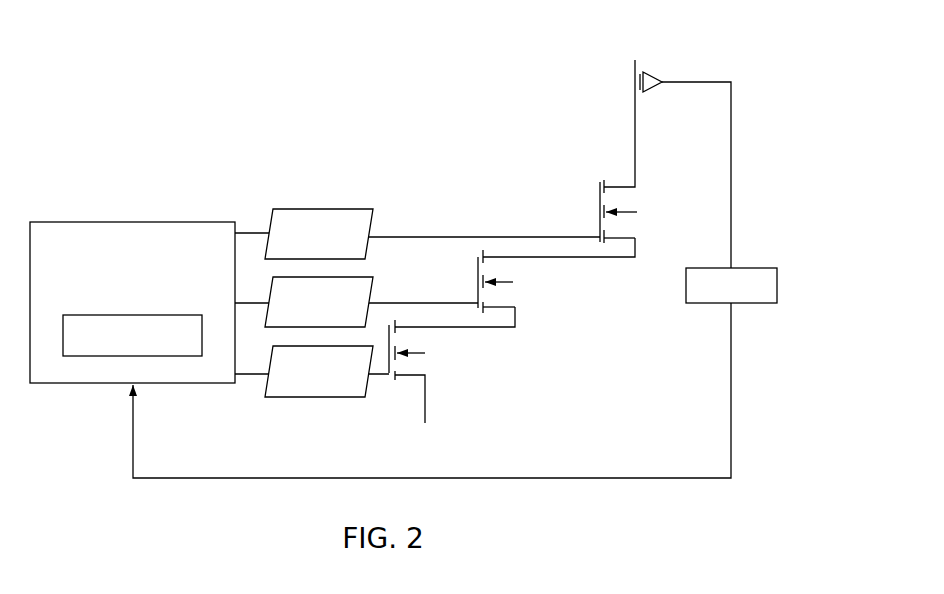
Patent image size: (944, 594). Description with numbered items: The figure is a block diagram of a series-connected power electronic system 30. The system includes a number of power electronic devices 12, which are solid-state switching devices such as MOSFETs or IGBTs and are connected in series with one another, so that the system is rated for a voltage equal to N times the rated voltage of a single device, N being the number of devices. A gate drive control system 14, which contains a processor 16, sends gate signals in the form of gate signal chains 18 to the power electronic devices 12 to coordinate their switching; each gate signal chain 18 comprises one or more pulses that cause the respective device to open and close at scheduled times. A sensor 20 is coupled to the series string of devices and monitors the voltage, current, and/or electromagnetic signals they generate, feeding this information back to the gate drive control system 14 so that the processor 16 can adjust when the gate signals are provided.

The gate drive control system 14 is at (136, 222).
The processor 16 is at (175, 358).
The gate signal chain 18 is at (362, 207).
The power electronic device 12 is at (441, 376).
The sensor 20 is at (707, 305).
The series-connected power electronic system 30 is at (723, 47).